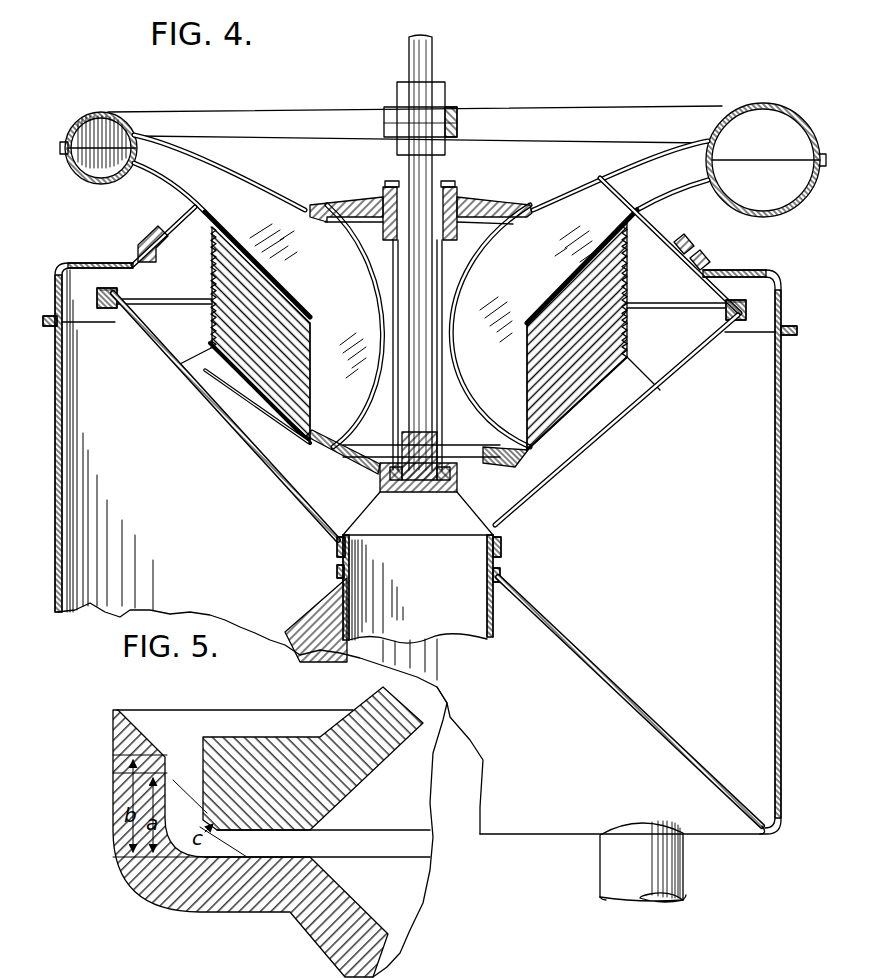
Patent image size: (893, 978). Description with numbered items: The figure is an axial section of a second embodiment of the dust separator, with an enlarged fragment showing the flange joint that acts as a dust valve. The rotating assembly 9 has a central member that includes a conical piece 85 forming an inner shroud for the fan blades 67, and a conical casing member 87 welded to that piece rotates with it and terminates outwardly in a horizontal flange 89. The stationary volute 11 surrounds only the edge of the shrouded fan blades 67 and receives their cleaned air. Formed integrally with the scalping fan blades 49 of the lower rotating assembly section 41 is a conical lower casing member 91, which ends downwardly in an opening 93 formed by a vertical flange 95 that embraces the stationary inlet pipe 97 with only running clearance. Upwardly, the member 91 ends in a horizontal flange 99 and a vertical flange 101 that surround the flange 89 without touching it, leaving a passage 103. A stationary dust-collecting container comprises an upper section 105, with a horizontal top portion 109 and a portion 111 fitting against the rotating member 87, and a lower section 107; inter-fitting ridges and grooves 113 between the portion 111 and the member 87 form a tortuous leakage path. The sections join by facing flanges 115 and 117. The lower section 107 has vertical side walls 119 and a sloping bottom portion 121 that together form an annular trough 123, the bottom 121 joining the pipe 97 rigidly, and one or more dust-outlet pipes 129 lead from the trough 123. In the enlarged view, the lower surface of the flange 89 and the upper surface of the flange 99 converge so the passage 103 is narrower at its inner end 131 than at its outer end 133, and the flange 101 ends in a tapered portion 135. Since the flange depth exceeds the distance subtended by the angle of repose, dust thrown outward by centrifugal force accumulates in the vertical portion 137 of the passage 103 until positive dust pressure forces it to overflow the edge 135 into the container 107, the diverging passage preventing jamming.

In FIG. 4, the rotating assembly 9 is at (321, 190).
In FIG. 4, the volute 11 is at (96, 125).
In FIG. 4, the lower rotating assembly section 41 is at (373, 493).
In FIG. 4, the scalping fan blades 49 is at (365, 431).
In FIG. 4, the fan blades 67 is at (216, 186).
In FIG. 4, the conical piece 85 is at (214, 213).
In FIG. 4, the conical casing member 87 is at (162, 250).
In FIG. 4, the horizontal flange 89 is at (118, 297).
In FIG. 5, the horizontal flange 89 is at (278, 768).
In FIG. 4, the conical lower casing member 91 is at (175, 380).
In FIG. 4, the opening 93 is at (500, 548).
In FIG. 4, the vertical flange 95 is at (502, 539).
In FIG. 4, the stationary inlet pipe 97 is at (428, 560).
In FIG. 4, the horizontal flange 99 is at (101, 314).
In FIG. 5, the horizontal flange 99 is at (259, 900).
In FIG. 4, the vertical flange 101 is at (98, 297).
In FIG. 5, the vertical flange 101 is at (114, 790).
In FIG. 4, the passage 103 is at (122, 306).
In FIG. 5, the passage 103 is at (270, 847).
In FIG. 4, the upper section 105 is at (747, 290).
In FIG. 4, the lower section 107 is at (755, 428).
In FIG. 4, the horizontal top portion 109 is at (733, 270).
In FIG. 4, the portion fitting against rotating casing 111 is at (692, 245).
In FIG. 4, the inter-fitting ridges and grooves 113 is at (696, 268).
In FIG. 4, the facing flange 115 is at (791, 324).
In FIG. 4, the facing flange 117 is at (787, 338).
In FIG. 4, the vertical side walls 119 is at (782, 388).
In FIG. 4, the sloping bottom portion 121 is at (603, 698).
In FIG. 4, the annular trough 123 is at (750, 805).
In FIG. 4, the dust-outlet pipe 129 is at (690, 858).
In FIG. 5, the inner end of passage 131 is at (305, 840).
In FIG. 5, the outer end of passage 133 is at (221, 846).
In FIG. 5, the tapered portion 135 is at (123, 736).
In FIG. 5, the vertical portion of passage 137 is at (181, 764).